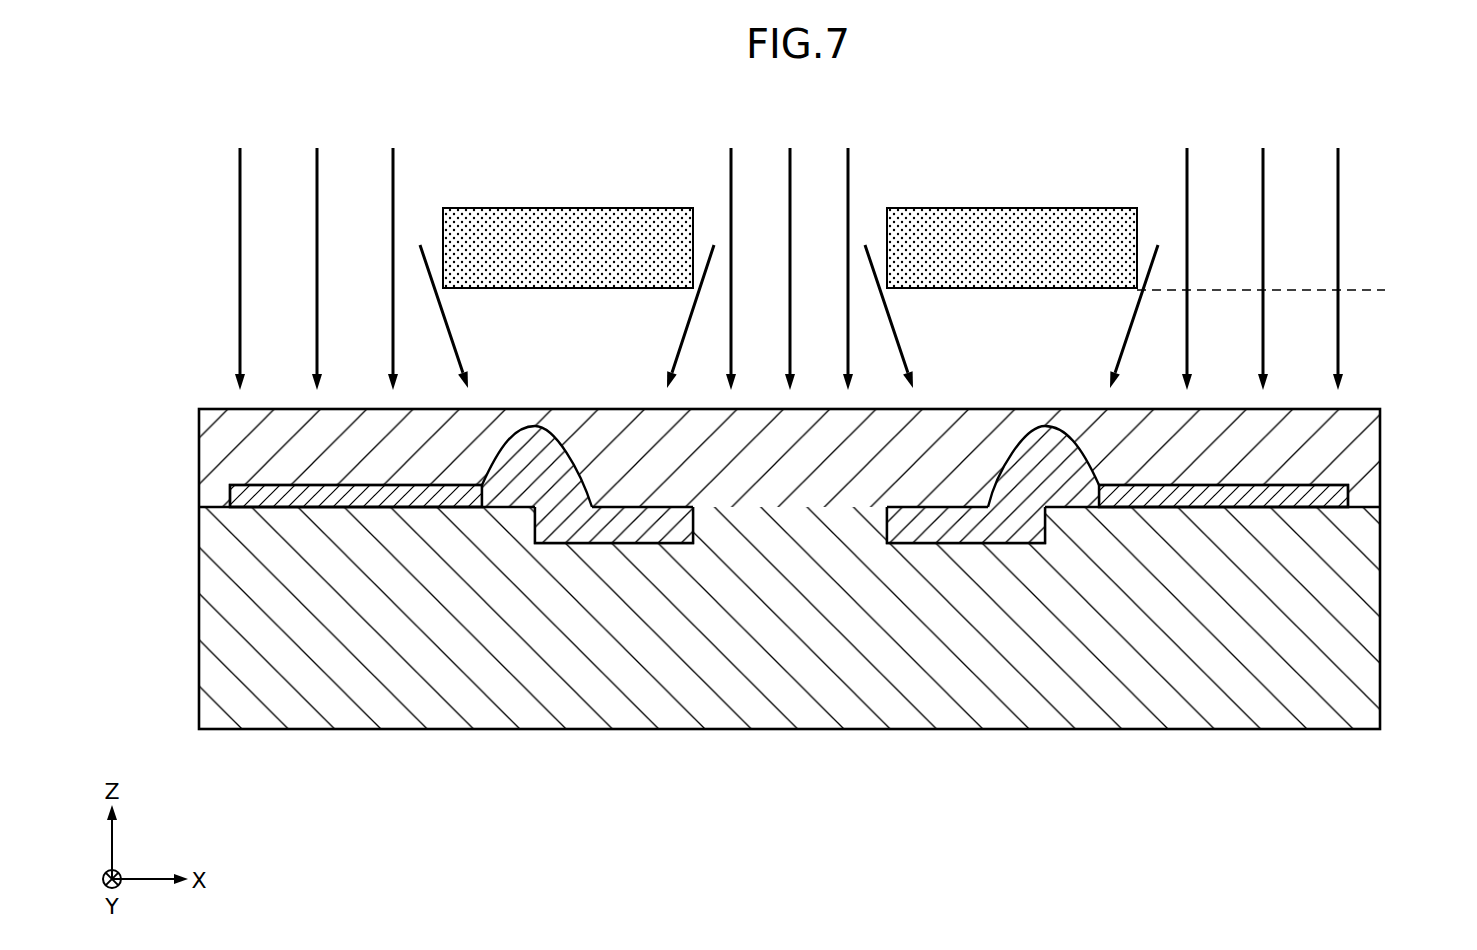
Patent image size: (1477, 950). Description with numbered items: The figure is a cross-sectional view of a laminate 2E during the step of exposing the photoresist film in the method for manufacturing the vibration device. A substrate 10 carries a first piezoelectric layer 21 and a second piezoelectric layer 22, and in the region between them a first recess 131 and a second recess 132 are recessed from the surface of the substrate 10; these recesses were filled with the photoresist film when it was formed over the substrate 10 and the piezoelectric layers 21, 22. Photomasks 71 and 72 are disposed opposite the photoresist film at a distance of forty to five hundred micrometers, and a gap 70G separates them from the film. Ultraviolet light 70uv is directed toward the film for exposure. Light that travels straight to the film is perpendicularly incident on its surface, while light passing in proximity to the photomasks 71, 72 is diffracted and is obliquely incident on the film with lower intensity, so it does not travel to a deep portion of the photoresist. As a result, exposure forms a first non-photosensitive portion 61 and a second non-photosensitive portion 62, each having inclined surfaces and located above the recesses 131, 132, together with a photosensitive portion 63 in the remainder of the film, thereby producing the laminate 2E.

The laminate 2E is at (152, 199).
The substrate 10 is at (222, 618).
The first piezoelectric layer 21 is at (287, 496).
The second piezoelectric layer 22 is at (1295, 496).
The first non-photosensitive portion 61 is at (530, 426).
The second non-photosensitive portion 62 is at (1046, 426).
The photosensitive portion 63 is at (1381, 481).
The gap between mask and resin layer 70G is at (1385, 290).
The ultraviolet light 70uv is at (218, 145).
The photomask 71 is at (566, 208).
The photomask 72 is at (1010, 208).
The first recess 131 is at (613, 544).
The second recess 132 is at (965, 544).